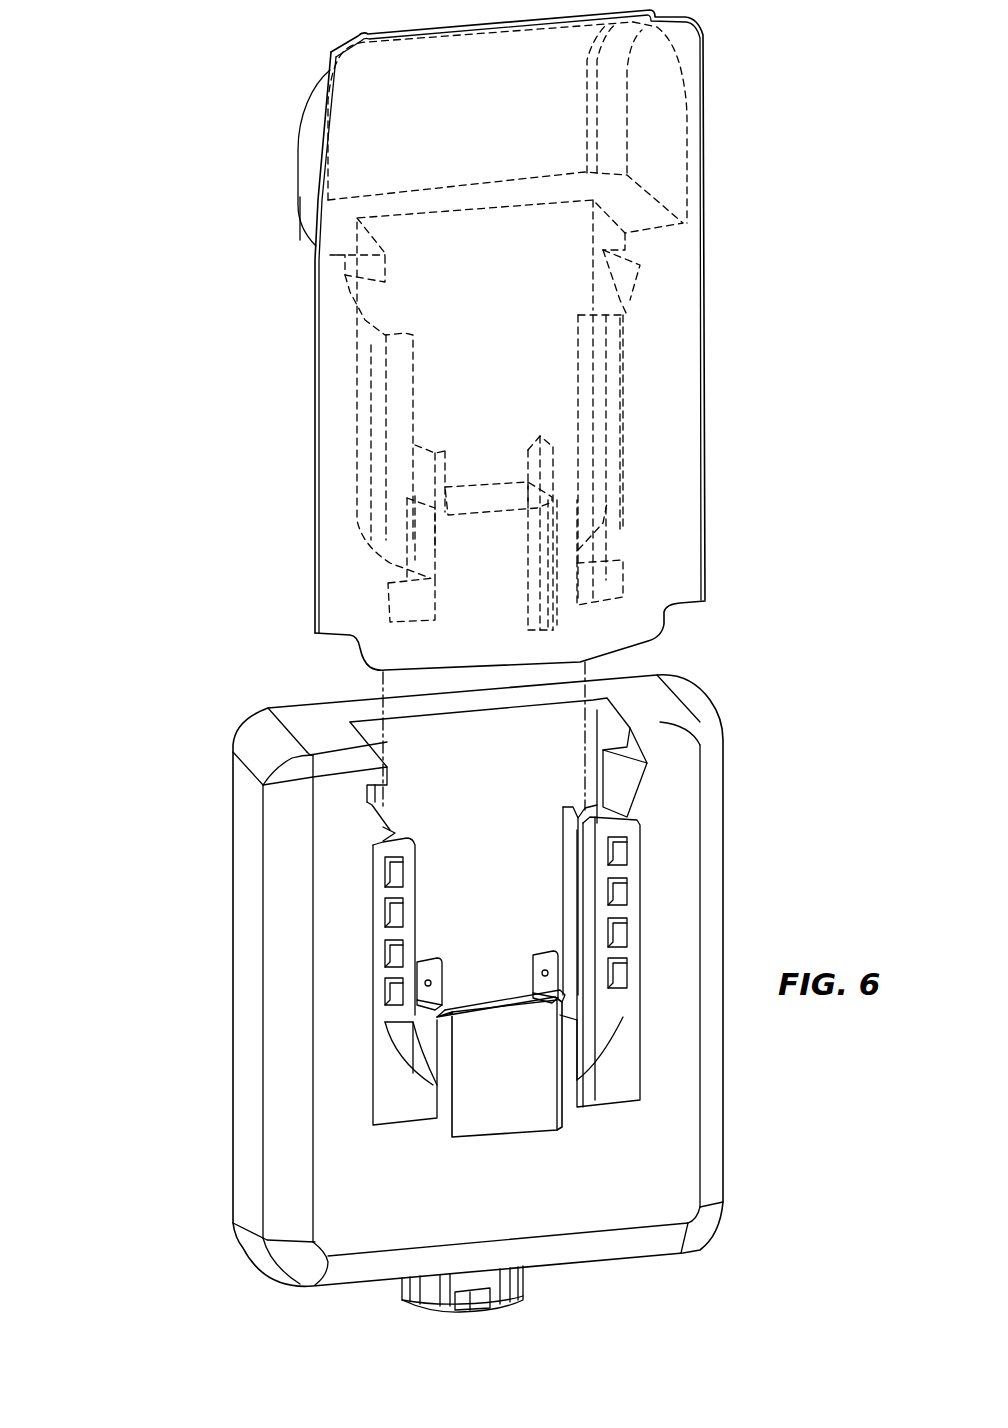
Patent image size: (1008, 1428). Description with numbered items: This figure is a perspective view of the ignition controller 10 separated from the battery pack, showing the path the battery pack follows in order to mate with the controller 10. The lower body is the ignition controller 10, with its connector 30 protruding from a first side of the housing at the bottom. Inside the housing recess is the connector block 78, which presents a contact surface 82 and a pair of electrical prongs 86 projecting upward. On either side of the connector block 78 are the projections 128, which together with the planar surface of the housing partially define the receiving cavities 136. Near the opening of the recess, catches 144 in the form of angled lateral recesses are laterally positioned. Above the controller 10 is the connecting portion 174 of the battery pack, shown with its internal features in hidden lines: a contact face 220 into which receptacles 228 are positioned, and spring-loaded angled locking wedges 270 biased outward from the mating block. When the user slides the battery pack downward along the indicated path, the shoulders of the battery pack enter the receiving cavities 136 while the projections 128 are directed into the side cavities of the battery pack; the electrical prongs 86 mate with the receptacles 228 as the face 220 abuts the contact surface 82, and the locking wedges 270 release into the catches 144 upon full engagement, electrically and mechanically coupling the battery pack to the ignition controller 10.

The ignition controller 10 is at (160, 722).
The connecting portion 174 is at (303, 45).
The angled locking wedges 270 is at (622, 282).
The receptacles 228 is at (543, 452).
The contact face 220 is at (490, 497).
The catches 144 is at (377, 800).
The receiving cavities 136 is at (388, 815).
The projections 128 is at (383, 932).
The connector block 78 is at (484, 990).
The contact surface 82 is at (513, 1000).
The electrical prongs 86 is at (543, 960).
The connector 30 is at (523, 1298).